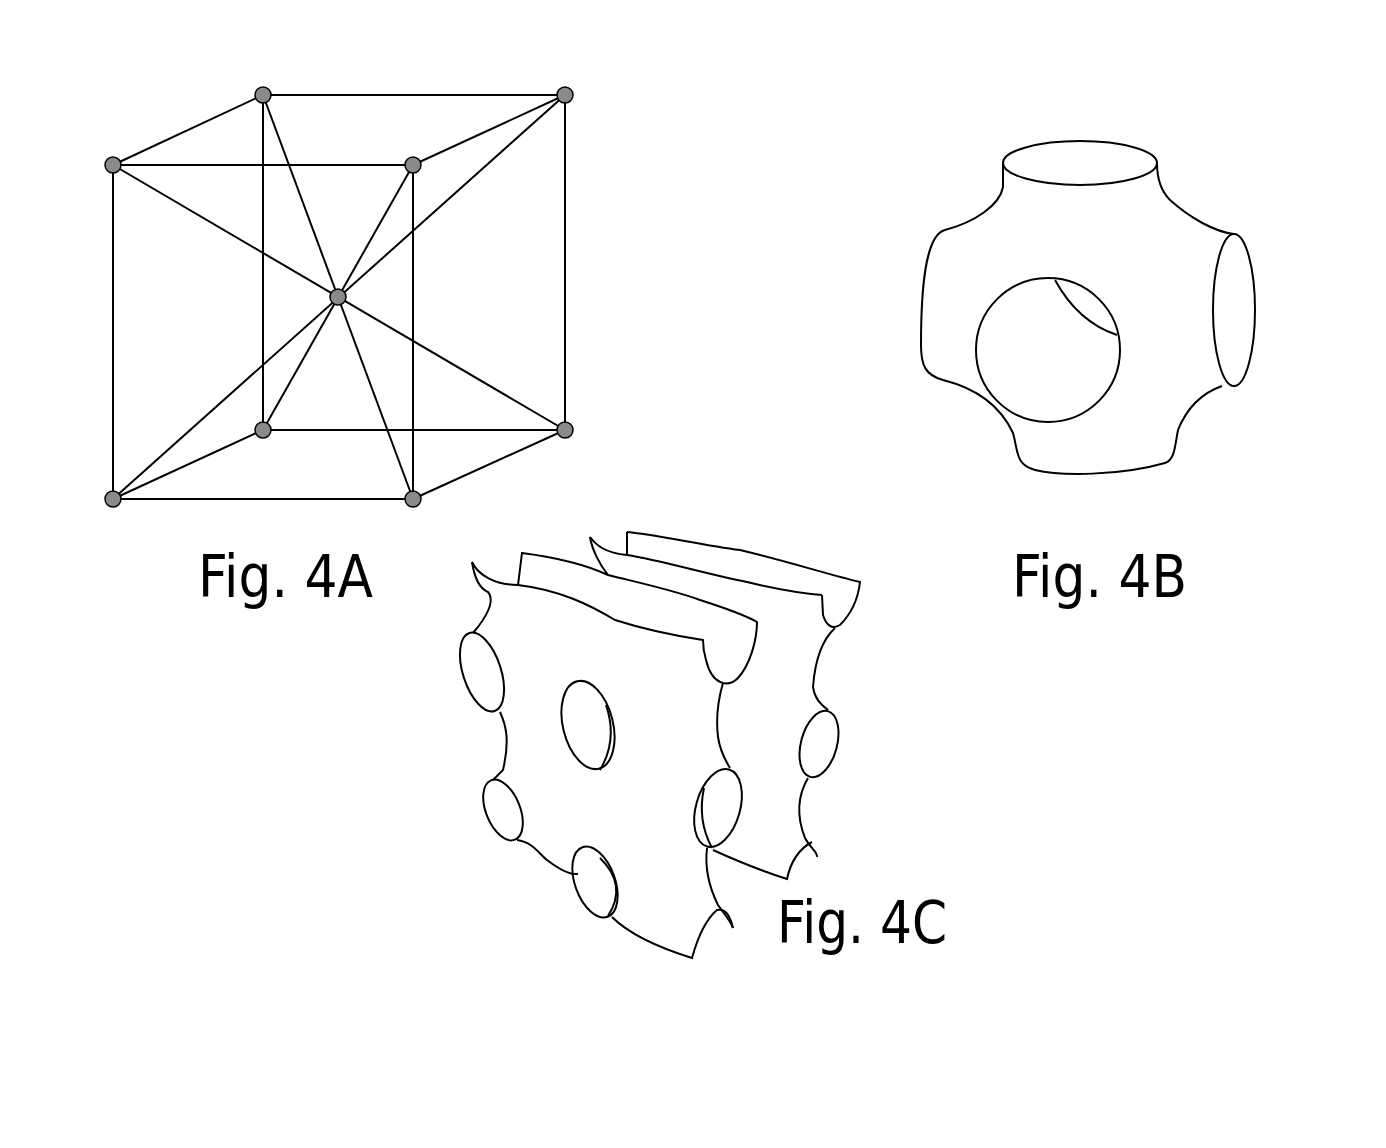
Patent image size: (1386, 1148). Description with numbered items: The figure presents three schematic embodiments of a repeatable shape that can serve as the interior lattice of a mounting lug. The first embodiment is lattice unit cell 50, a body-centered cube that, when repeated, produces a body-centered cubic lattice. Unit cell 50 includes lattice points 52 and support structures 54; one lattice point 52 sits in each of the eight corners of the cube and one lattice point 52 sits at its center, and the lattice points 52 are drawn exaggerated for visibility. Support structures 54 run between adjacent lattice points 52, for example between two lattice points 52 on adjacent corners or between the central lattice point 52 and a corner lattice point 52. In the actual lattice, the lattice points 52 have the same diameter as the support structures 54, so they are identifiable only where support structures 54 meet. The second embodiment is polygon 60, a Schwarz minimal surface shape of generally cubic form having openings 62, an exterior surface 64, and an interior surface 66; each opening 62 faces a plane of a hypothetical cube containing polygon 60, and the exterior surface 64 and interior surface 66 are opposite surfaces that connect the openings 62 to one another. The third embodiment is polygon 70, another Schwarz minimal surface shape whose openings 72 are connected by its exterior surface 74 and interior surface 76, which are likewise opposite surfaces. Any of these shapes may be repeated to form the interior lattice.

In FIG. 4A, the lattice unit cell 50 is at (397, 272).
In FIG. 4A, the lattice points 52 is at (253, 92).
In FIG. 4A, the support structures 54 is at (443, 205).
In FIG. 4B, the polygon 60 is at (1076, 276).
In FIG. 4B, the openings 62 is at (1085, 307).
In FIG. 4B, the exterior surface 64 is at (1117, 427).
In FIG. 4B, the interior surface 66 is at (1012, 338).
In FIG. 4C, the polygon 70 is at (660, 691).
In FIG. 4C, the openings 72 is at (488, 797).
In FIG. 4C, the exterior surface 74 is at (522, 627).
In FIG. 4C, the interior surface 76 is at (640, 545).